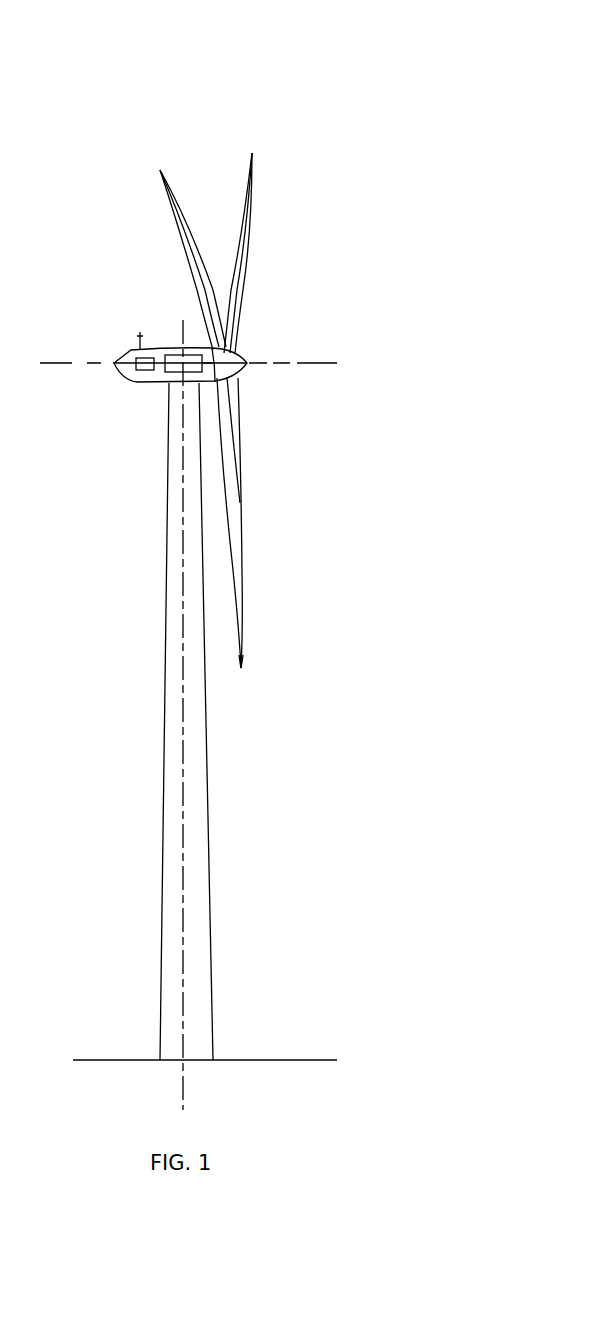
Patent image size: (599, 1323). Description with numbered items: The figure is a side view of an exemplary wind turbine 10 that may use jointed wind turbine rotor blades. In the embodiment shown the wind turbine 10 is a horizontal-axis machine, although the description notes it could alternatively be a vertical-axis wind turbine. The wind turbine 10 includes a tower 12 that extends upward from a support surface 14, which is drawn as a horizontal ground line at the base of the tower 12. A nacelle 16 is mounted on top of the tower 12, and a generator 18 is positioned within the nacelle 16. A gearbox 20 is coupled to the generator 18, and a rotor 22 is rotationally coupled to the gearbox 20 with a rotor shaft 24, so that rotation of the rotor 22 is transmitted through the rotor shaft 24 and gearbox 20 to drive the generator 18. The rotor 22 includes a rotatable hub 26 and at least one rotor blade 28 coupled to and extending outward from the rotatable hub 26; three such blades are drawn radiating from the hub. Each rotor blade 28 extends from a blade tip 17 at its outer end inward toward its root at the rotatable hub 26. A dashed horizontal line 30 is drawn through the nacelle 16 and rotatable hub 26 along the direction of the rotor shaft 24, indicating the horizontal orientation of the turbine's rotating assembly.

The wind turbine 10 is at (401, 58).
The tower 12 is at (162, 823).
The support surface 14 is at (117, 1058).
The nacelle 16 is at (135, 383).
The blade tip 17 is at (243, 668).
The generator 18 is at (144, 357).
The gearbox 20 is at (172, 348).
The rotor 22 is at (215, 420).
The rotor shaft 24 is at (211, 386).
The rotatable hub 26 is at (247, 367).
The rotor blade 28 is at (182, 227).
The axis of rotation 30 is at (310, 365).